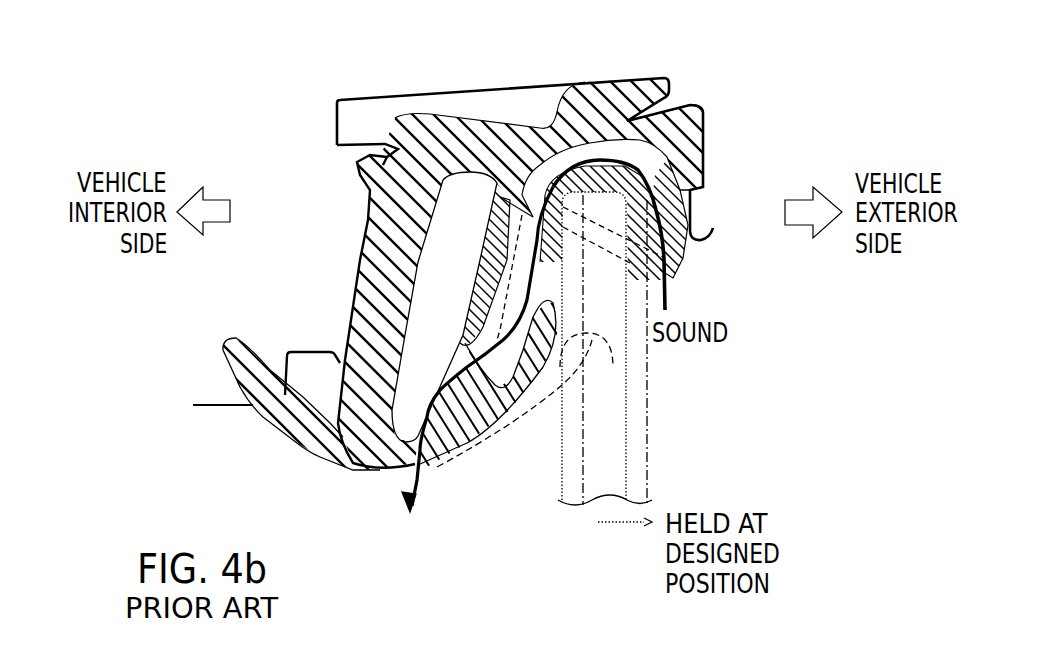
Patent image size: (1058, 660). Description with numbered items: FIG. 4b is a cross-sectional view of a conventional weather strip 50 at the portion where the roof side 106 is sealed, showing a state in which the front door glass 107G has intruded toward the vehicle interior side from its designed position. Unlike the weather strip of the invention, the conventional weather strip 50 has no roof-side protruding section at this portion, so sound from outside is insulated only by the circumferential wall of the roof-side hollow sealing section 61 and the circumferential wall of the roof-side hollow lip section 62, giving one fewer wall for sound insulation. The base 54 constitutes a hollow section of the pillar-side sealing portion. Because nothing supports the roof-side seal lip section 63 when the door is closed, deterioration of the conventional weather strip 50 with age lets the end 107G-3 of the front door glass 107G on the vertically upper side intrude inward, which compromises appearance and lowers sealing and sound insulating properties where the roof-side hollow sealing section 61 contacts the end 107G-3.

The roof side 106 is at (498, 68).
The base 54 is at (380, 280).
The roof-side hollow lip section 62 is at (473, 283).
The conventional weather strip 50 is at (265, 446).
The roof-side hollow sealing section 61 is at (673, 183).
The end of the front door glass on the vertically upper side 107G-3 is at (607, 213).
The roof-side seal lip section 63 is at (560, 327).
The front door glass 107G is at (603, 457).